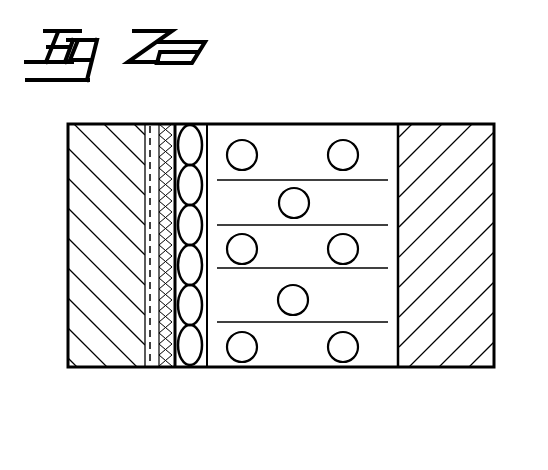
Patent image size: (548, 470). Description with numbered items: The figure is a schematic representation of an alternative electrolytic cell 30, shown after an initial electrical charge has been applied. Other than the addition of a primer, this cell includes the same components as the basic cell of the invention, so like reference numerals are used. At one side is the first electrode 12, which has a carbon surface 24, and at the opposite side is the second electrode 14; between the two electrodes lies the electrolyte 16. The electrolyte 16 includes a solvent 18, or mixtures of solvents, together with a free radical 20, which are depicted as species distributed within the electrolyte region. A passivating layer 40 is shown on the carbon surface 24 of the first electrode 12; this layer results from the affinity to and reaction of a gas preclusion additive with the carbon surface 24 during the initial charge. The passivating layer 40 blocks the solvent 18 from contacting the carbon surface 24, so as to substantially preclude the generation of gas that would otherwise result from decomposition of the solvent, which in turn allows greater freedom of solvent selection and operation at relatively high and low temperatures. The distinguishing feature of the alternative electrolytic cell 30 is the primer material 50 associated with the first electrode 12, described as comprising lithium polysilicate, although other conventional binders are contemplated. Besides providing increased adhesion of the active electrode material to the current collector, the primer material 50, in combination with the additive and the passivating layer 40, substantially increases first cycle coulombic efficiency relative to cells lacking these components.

The first electrode 12 is at (103, 369).
The second electrode 14 is at (442, 369).
The electrolyte 16 is at (278, 376).
The solvent 18 is at (349, 369).
The free radical 20 is at (354, 145).
The carbon surface 24 is at (165, 369).
The alternative electrolytic cell 30 is at (417, 84).
The passivating layer 40 is at (195, 369).
The primer material 50 is at (150, 369).